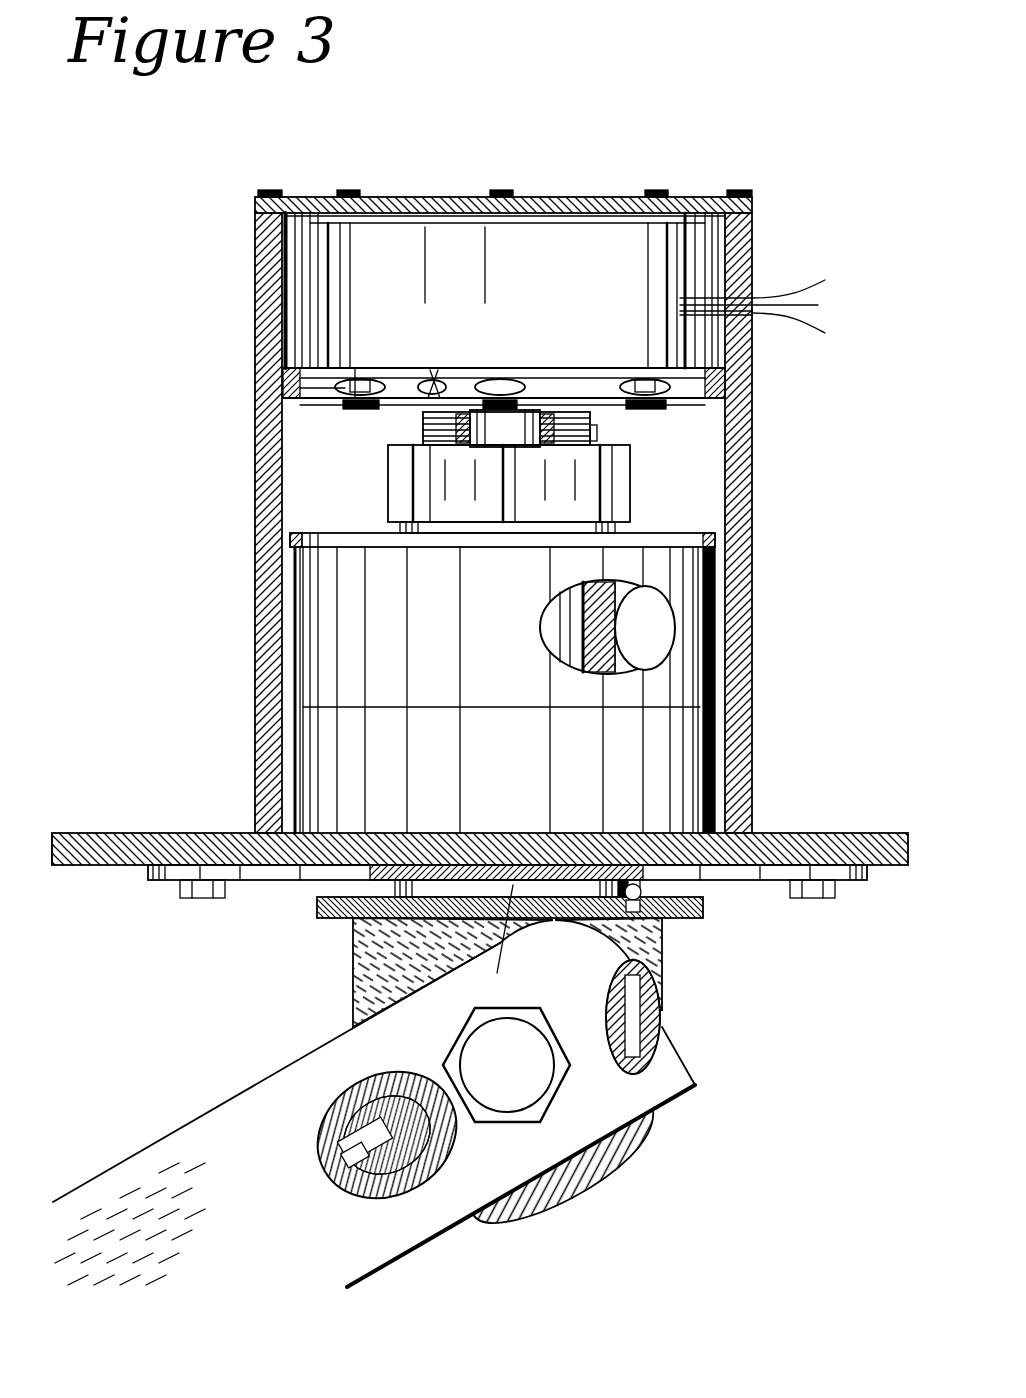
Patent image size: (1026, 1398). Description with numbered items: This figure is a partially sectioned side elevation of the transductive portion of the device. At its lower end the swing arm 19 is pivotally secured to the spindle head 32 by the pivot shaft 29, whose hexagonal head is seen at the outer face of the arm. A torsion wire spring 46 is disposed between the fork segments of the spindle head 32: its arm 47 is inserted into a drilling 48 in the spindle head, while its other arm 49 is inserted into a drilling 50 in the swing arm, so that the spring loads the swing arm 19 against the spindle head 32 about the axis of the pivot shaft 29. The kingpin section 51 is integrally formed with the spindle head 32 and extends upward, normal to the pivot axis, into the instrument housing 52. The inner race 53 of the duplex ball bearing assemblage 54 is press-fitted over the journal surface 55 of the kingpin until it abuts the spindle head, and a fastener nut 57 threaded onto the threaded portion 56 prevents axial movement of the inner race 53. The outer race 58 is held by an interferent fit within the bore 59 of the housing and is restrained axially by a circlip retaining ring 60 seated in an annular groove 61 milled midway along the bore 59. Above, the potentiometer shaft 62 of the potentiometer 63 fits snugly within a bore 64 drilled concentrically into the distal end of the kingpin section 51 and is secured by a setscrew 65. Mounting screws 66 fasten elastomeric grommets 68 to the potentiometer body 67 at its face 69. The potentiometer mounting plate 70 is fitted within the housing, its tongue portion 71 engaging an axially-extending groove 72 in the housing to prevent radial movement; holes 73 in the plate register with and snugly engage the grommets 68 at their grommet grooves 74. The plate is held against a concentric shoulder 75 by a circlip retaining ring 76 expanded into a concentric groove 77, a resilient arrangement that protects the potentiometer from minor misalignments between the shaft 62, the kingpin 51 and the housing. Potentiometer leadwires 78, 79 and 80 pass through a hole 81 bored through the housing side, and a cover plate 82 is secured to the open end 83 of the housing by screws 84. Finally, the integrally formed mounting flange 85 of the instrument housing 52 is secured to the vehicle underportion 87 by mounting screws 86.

The swing arm 19 is at (272, 1117).
The pivot shaft 29 is at (520, 1073).
The spindle head 32 is at (327, 908).
The torsion wire spring 46 is at (407, 1137).
The arm 47 is at (633, 908).
The drilling 48 is at (640, 907).
The arm 49 is at (355, 1155).
The drilling 50 is at (350, 1150).
The kingpin section 51 is at (560, 618).
The instrument housing 52 is at (752, 668).
The inner race 53 is at (518, 535).
The duplex ball bearing assemblage 54 is at (380, 700).
The journal surface 55 is at (596, 608).
The threaded portion 56 is at (597, 433).
The fastener nut 57 is at (470, 497).
The outer race 58 is at (715, 762).
The bore 59 is at (595, 430).
The circlip retaining ring 60 is at (332, 558).
The annular groove 61 is at (357, 542).
The potentiometer shaft 62 is at (507, 433).
The potentiometer 63 is at (453, 252).
The bore 64 is at (440, 455).
The setscrew 65 is at (554, 405).
The mounting screws 66 is at (662, 403).
The potentiometer body 67 is at (322, 343).
The elastomeric grommets 68 is at (505, 385).
The face 69 is at (355, 380).
The potentiometer mounting plate 70 is at (312, 387).
The tongue portion 71 is at (437, 382).
The axially-extending groove 72 is at (468, 432).
The holes 73 is at (387, 383).
The grommet grooves 74 is at (368, 388).
The concentric shoulder 75 is at (717, 394).
The circlip retaining ring 76 is at (287, 372).
The concentric groove 77 is at (735, 375).
The potentiometer leadwire 78 is at (798, 276).
The potentiometer leadwire 79 is at (769, 305).
The potentiometer leadwire 80 is at (798, 337).
The hole 81 is at (735, 297).
The cover plate 82 is at (265, 207).
The open end 83 is at (302, 212).
The screws 84 is at (268, 190).
The mounting flange 85 is at (737, 872).
The mounting screws 86 is at (210, 888).
The vehicle underportion 87 is at (128, 852).